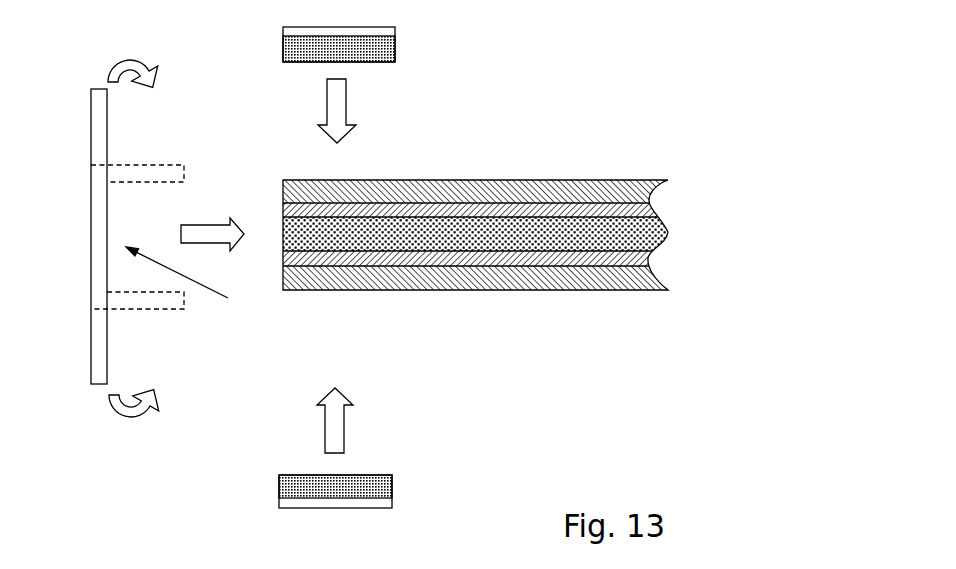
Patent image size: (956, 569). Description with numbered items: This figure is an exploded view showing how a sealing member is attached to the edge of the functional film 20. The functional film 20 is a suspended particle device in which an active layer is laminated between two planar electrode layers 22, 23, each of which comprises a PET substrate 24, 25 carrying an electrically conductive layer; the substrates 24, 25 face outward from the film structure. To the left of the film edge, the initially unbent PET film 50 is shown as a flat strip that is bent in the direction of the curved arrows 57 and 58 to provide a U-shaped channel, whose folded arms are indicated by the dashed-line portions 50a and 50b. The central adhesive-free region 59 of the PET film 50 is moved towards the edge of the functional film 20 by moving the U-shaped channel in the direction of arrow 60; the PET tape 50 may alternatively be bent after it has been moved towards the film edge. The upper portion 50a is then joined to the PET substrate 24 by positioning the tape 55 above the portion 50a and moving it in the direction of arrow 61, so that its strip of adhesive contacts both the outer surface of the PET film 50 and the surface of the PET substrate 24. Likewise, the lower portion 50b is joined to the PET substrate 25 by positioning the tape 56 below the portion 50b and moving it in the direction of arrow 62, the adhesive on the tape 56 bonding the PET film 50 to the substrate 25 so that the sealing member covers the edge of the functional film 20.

The functional film 20 is at (507, 222).
The planar electrode layer 22 is at (507, 164).
The planar electrode layer 23 is at (507, 304).
The PET substrate 24 is at (443, 192).
The PET substrate 25 is at (471, 283).
The PET film 50 is at (94, 232).
The portion of PET tape 50a is at (163, 173).
The portion of PET tape 50b is at (163, 300).
The tape 55 is at (415, 42).
The tape 56 is at (415, 488).
The arrow 57 is at (110, 400).
The arrow 58 is at (107, 72).
The adhesive-free region 59 is at (193, 285).
The arrow 60 is at (204, 235).
The arrow 61 is at (332, 99).
The arrow 62 is at (340, 424).